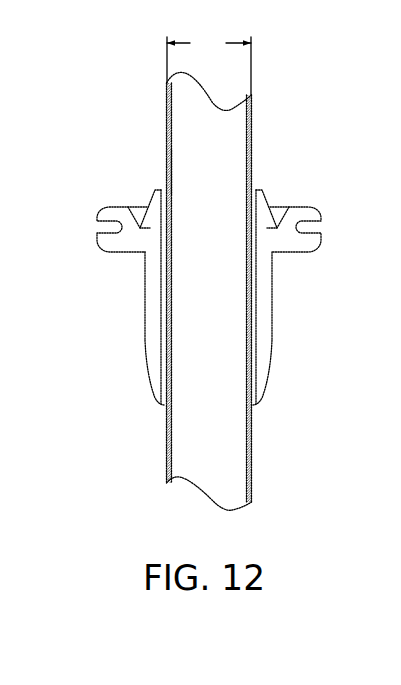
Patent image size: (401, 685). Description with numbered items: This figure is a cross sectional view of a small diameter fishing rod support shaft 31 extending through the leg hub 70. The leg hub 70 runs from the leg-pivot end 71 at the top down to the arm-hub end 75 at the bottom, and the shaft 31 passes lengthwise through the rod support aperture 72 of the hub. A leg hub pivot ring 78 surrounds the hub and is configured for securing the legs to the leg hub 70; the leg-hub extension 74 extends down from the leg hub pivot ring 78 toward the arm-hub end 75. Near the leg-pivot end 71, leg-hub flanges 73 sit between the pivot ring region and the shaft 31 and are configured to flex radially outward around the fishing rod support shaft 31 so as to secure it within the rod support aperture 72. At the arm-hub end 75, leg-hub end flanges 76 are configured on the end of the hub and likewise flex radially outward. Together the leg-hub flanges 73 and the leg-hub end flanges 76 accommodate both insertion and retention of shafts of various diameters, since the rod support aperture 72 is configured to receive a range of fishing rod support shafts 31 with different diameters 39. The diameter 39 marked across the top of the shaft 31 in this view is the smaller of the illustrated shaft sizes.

The fishing rod support shaft 31 is at (210, 152).
The diameter 39 is at (209, 62).
The leg hub 70 is at (262, 292).
The leg-pivot end 71 is at (255, 190).
The rod support aperture 72 is at (170, 193).
The leg-hub flanges 73 is at (157, 192).
The leg-hub extension 74 is at (263, 328).
The arm-hub end 75 is at (252, 394).
The leg-hub end flanges 76 is at (157, 388).
The leg hub pivot ring 78 is at (293, 215).